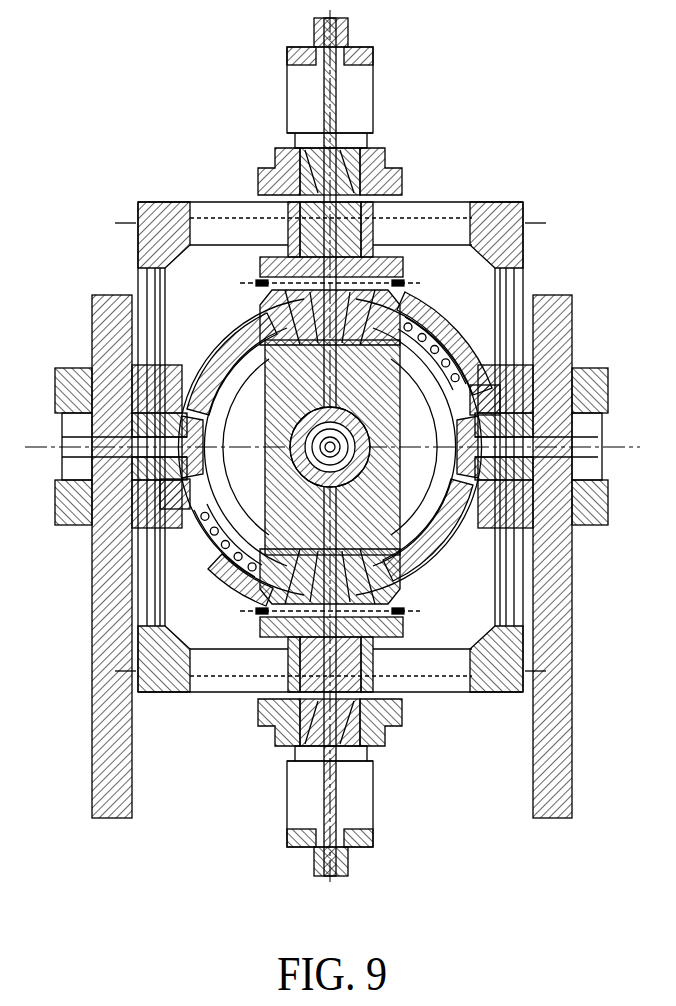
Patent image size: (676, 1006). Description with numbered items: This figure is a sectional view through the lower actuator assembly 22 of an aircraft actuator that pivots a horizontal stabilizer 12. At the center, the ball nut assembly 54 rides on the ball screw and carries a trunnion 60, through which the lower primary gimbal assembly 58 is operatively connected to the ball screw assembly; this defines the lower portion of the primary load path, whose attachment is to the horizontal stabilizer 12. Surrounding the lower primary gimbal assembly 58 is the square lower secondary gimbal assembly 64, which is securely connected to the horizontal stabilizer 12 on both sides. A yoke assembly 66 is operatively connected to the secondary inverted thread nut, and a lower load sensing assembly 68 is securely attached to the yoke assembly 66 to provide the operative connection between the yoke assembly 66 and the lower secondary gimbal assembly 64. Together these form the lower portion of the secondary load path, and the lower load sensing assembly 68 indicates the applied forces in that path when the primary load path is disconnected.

The horizontal stabilizer 12 is at (100, 686).
The lower actuator assembly 22 is at (462, 320).
The ball nut assembly 54 is at (270, 400).
The lower primary gimbal assembly 58 is at (455, 556).
The trunnion 60 is at (232, 545).
The lower secondary gimbal assembly 64 is at (495, 198).
The yoke assembly 66 is at (402, 168).
The lower load sensing assembly 68 is at (377, 84).